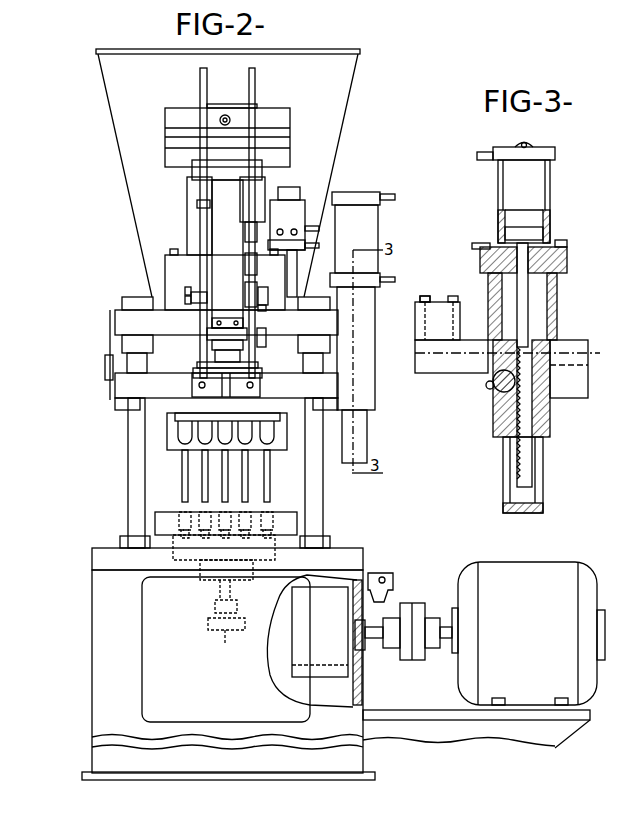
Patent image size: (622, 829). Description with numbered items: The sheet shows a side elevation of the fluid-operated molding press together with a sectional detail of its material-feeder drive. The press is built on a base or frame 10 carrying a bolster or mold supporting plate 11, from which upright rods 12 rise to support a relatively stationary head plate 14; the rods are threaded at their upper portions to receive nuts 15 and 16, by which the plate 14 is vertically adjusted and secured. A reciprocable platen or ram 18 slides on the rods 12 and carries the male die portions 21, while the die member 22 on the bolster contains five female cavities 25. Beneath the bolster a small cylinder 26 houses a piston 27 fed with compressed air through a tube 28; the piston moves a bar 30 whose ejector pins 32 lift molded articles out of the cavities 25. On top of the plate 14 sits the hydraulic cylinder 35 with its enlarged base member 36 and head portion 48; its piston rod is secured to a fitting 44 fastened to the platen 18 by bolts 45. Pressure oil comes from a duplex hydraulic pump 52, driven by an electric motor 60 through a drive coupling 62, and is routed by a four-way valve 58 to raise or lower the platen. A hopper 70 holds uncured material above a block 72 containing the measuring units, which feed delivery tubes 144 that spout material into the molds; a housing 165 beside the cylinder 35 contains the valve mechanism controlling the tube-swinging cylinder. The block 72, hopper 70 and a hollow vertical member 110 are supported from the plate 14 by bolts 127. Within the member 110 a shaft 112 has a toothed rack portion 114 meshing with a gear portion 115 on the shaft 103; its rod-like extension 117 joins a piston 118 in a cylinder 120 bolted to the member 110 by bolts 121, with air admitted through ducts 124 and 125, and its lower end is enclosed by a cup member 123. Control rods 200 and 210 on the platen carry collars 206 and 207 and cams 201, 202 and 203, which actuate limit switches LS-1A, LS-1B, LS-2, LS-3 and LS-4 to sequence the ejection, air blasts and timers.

In FIG. 2, the base or frame 10 is at (97, 608).
In FIG. 2, the bolster or mold supporting plate 11 is at (106, 555).
In FIG. 2, the upright struts or rods 12 is at (130, 432).
In FIG. 2, the head or relatively stationary plate 14 is at (128, 322).
In FIG. 3, the head or relatively stationary plate 14 is at (460, 315).
In FIG. 2, the threaded nut 15 is at (125, 343).
In FIG. 2, the threaded nut 16 is at (125, 302).
In FIG. 2, the reciprocable platen or ram 18 is at (125, 388).
In FIG. 2, the male portions of the molding dies 21 is at (244, 438).
In FIG. 2, the die member 22 is at (285, 512).
In FIG. 2, the female portions or cavities 25 is at (236, 518).
In FIG. 2, the cylinder 26 is at (207, 623).
In FIG. 2, the piston 27 is at (213, 607).
In FIG. 2, the tube 28 is at (226, 630).
In FIG. 2, the bar 30 is at (197, 562).
In FIG. 2, the article ejector pins 32 is at (212, 546).
In FIG. 2, the cylinder 35 is at (186, 182).
In FIG. 2, the enlarged base member 36 is at (168, 272).
In FIG. 2, the fitting 44 is at (245, 356).
In FIG. 2, the bolts 45 is at (262, 371).
In FIG. 2, the head portion 48 is at (272, 112).
In FIG. 2, the hydraulic pump 52 is at (314, 641).
In FIG. 2, the 4-way valve 58 is at (396, 572).
In FIG. 2, the motor 60 is at (484, 655).
In FIG. 2, the drive coupling 62 is at (408, 656).
In FIG. 2, the hopper 70 is at (352, 68).
In FIG. 3, the block 72 is at (430, 372).
In FIG. 3, the shaft 103 is at (510, 397).
In FIG. 2, the vertically disposed member 110 is at (368, 303).
In FIG. 3, the vertically disposed member 110 is at (550, 312).
In FIG. 3, the shaft or rack member 112 is at (530, 415).
In FIG. 3, the toothed rack portion 114 is at (512, 456).
In FIG. 3, the pinion or gear portion 115 is at (497, 385).
In FIG. 3, the rod-like extension 117 is at (522, 295).
In FIG. 3, the piston 118 is at (530, 222).
In FIG. 2, the cylinder 120 is at (375, 213).
In FIG. 3, the cylinder 120 is at (550, 171).
In FIG. 3, the bolts 121 is at (575, 245).
In FIG. 2, the shield or cup member 123 is at (362, 433).
In FIG. 3, the shield or cup member 123 is at (540, 480).
In FIG. 2, the tube or duct 124 is at (400, 186).
In FIG. 3, the tube or duct 124 is at (490, 140).
In FIG. 2, the tube or duct 125 is at (393, 279).
In FIG. 3, the tube or duct 125 is at (480, 247).
In FIG. 3, the bolts 127 is at (430, 298).
In FIG. 2, the material discharge or delivery tube 144 is at (203, 490).
In FIG. 2, the housing 165 is at (310, 184).
In FIG. 2, the control rod 200 is at (200, 95).
In FIG. 2, the cam 201 is at (245, 231).
In FIG. 2, the cam member 202 is at (245, 262).
In FIG. 2, the lower stop collar 203 is at (245, 290).
In FIG. 2, the control collar 206 is at (197, 204).
In FIG. 2, the cam or collar 207 is at (199, 292).
In FIG. 2, the control rod 210 is at (257, 88).
In FIG. 2, the limit switch LS-1A is at (185, 290).
In FIG. 2, the limit switch LS-1B is at (185, 299).
In FIG. 2, the limit switch LS-2 is at (266, 335).
In FIG. 2, the limit switch LS-3 is at (268, 285).
In FIG. 2, the limit switch LS-4 is at (264, 307).